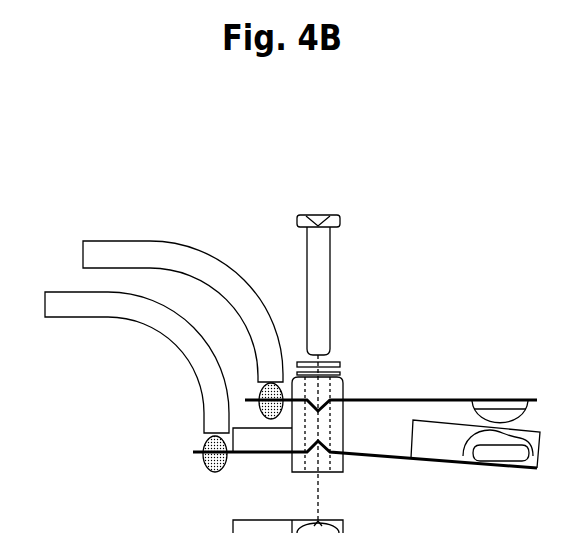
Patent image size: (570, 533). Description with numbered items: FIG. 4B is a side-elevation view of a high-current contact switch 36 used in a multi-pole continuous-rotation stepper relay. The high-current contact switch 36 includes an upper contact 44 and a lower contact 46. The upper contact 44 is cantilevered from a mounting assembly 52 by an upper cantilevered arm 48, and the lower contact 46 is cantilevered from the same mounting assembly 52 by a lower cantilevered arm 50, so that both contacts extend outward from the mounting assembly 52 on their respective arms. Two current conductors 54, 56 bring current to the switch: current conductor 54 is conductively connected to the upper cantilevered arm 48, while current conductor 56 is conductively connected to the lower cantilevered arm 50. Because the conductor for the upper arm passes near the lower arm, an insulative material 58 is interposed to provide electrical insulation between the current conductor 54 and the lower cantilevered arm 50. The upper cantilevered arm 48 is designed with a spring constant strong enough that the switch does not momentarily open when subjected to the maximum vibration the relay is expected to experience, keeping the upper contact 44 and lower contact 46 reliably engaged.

The high-current contact switch 36 is at (446, 286).
The upper contact 44 is at (470, 406).
The lower contact 46 is at (500, 447).
The upper cantilevered arm 48 is at (372, 398).
The lower cantilevered arm 50 is at (375, 455).
The mounting assembly 52 is at (318, 190).
The current conductor 54 is at (132, 238).
The current conductor 56 is at (155, 335).
The insulative material 58 is at (268, 440).